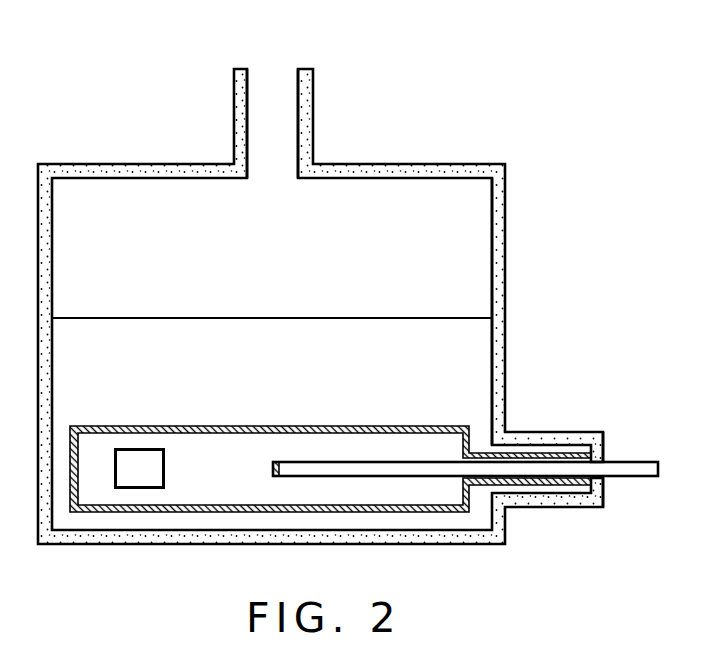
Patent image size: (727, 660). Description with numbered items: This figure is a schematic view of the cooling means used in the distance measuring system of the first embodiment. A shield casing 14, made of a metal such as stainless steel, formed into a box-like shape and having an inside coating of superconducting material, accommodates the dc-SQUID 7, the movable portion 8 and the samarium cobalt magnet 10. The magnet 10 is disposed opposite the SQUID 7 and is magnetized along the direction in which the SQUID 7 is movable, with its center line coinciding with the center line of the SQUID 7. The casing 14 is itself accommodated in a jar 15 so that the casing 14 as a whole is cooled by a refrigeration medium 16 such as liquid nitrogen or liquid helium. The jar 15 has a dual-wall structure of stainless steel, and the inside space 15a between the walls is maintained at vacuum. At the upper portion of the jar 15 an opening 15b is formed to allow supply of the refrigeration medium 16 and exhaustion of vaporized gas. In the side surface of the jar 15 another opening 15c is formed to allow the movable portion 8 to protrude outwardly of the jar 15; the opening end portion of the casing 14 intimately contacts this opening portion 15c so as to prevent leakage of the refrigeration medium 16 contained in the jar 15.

The dc-SQUID 7 is at (275, 462).
The movable portion 8 is at (638, 478).
The samarium cobalt magnet 10 is at (138, 457).
The shield casing 14 is at (385, 426).
The jar 15 is at (507, 238).
The inside space 15a is at (500, 281).
The opening 15b is at (276, 73).
The opening 15c is at (606, 462).
The refrigeration medium 16 is at (482, 375).